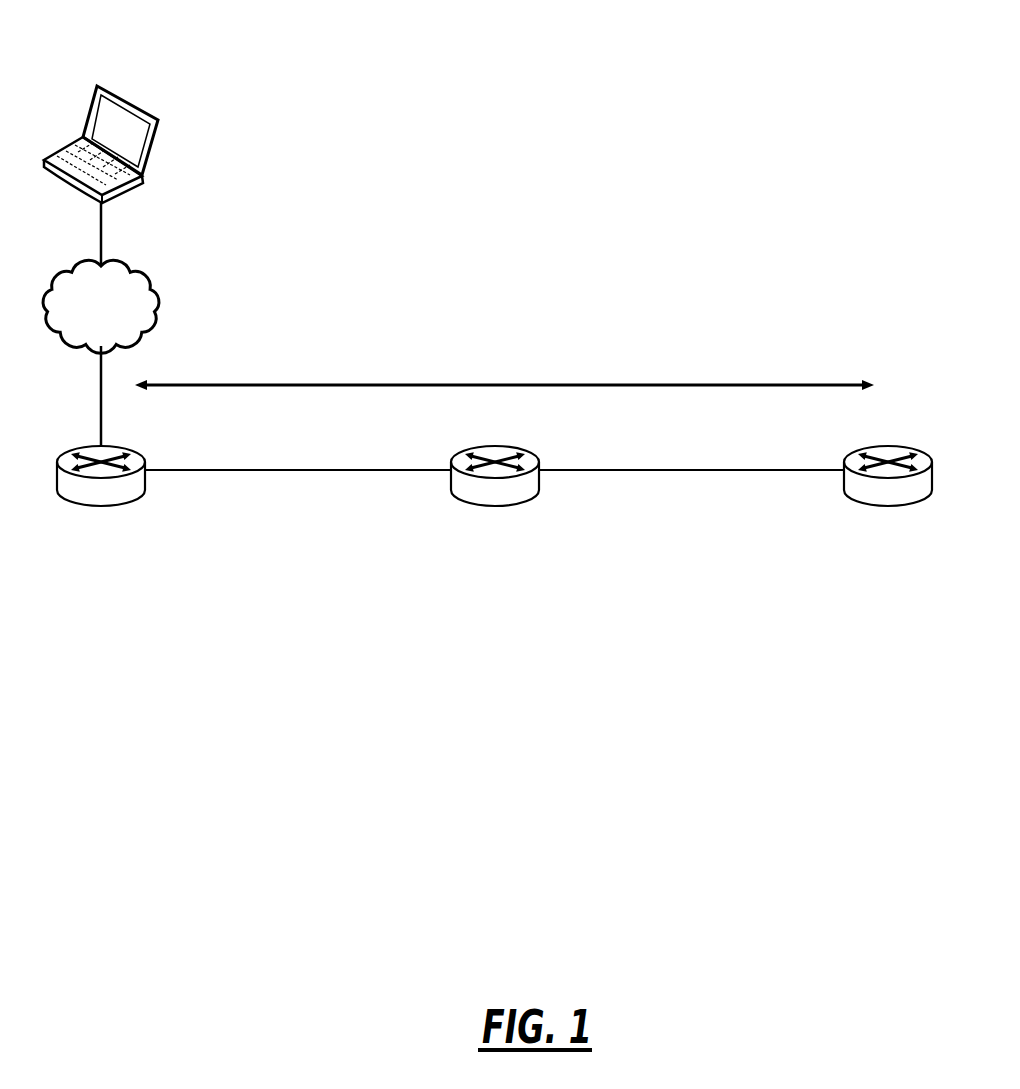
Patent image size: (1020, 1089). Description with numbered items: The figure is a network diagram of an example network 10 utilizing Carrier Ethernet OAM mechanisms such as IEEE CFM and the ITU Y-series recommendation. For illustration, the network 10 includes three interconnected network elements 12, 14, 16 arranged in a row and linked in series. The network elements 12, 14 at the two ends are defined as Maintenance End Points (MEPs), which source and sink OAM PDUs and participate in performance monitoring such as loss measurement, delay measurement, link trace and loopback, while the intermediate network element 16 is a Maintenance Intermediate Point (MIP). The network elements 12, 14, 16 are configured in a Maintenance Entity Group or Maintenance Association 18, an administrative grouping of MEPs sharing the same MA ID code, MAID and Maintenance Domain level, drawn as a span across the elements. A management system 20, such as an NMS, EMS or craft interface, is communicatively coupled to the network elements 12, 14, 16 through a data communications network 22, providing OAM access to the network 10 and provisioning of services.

The network 10 is at (566, 108).
The network element 12 is at (87, 565).
The network element 14 is at (880, 565).
The network element 16 is at (488, 565).
The Maintenance Association 18 is at (517, 338).
The management system 20 is at (143, 77).
The data communications network 22 is at (158, 300).